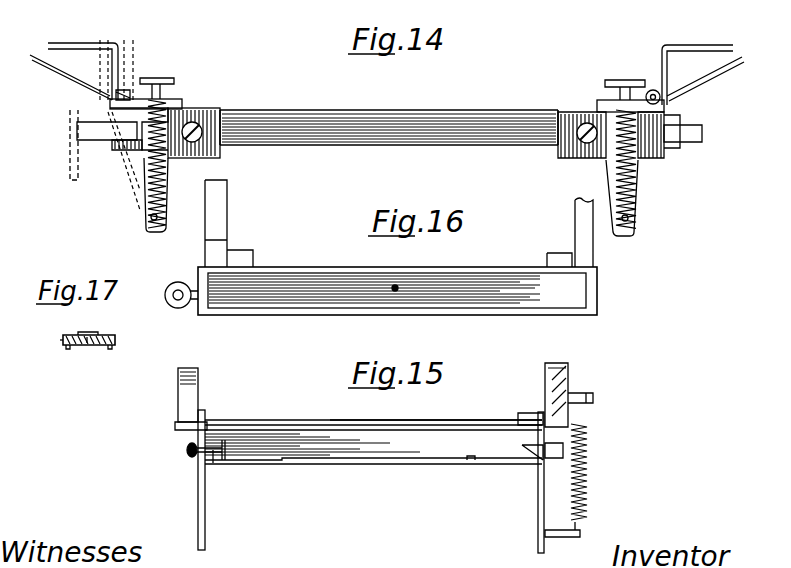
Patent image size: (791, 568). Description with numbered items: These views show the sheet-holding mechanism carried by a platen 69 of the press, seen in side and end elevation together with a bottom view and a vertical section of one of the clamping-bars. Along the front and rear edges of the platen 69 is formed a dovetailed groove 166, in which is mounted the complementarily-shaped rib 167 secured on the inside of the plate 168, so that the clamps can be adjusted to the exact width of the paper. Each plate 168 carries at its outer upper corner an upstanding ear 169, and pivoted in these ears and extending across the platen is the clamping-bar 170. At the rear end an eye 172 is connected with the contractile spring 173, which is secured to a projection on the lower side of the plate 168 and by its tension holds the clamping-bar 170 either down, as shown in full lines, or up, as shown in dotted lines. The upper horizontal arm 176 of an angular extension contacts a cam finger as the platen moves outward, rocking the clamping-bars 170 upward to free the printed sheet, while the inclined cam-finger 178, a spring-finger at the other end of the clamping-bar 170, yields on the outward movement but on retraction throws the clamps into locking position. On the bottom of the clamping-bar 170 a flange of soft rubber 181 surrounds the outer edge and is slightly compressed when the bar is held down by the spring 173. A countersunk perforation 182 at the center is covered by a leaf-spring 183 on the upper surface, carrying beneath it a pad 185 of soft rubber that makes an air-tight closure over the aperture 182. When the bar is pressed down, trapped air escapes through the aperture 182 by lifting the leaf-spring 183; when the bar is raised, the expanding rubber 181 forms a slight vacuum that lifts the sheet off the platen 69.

In FIG. 15, the platen 69 is at (438, 440).
In FIG. 15, the dovetailed groove 166 is at (224, 445).
In FIG. 15, the rib 167 is at (215, 463).
In FIG. 14, the plate 168 is at (214, 150).
In FIG. 15, the plate 168 is at (200, 492).
In FIG. 14, the upstanding ear 169 is at (126, 95).
In FIG. 14, the clamping-bar 170 is at (180, 100).
In FIG. 16, the clamping-bar 170 is at (495, 290).
In FIG. 17, the clamping-bar 170 is at (105, 336).
In FIG. 14, the eye 172 is at (170, 80).
In FIG. 14, the contractile spring 173 is at (150, 200).
In FIG. 15, the contractile spring 173 is at (588, 492).
In FIG. 14, the upper horizontal arm 176 is at (89, 30).
In FIG. 15, the upper horizontal arm 176 is at (198, 382).
In FIG. 14, the inclined cam-finger 178 is at (57, 76).
In FIG. 16, the soft rubber flange 181 is at (324, 262).
In FIG. 17, the soft rubber flange 181 is at (115, 342).
In FIG. 15, the soft rubber flange 181 is at (303, 430).
In FIG. 16, the countersunk perforation 182 is at (397, 286).
In FIG. 17, the countersunk perforation 182 is at (88, 343).
In FIG. 17, the leaf-spring 183 is at (96, 334).
In FIG. 15, the leaf-spring 183 is at (495, 420).
In FIG. 17, the pad 185 is at (63, 340).
In FIG. 15, the pad 185 is at (333, 422).